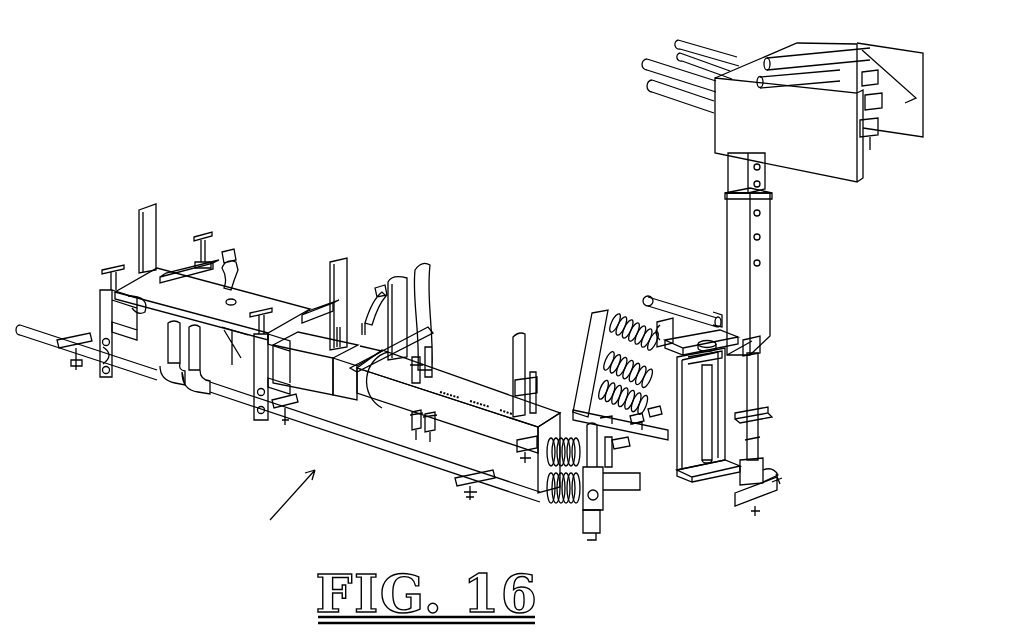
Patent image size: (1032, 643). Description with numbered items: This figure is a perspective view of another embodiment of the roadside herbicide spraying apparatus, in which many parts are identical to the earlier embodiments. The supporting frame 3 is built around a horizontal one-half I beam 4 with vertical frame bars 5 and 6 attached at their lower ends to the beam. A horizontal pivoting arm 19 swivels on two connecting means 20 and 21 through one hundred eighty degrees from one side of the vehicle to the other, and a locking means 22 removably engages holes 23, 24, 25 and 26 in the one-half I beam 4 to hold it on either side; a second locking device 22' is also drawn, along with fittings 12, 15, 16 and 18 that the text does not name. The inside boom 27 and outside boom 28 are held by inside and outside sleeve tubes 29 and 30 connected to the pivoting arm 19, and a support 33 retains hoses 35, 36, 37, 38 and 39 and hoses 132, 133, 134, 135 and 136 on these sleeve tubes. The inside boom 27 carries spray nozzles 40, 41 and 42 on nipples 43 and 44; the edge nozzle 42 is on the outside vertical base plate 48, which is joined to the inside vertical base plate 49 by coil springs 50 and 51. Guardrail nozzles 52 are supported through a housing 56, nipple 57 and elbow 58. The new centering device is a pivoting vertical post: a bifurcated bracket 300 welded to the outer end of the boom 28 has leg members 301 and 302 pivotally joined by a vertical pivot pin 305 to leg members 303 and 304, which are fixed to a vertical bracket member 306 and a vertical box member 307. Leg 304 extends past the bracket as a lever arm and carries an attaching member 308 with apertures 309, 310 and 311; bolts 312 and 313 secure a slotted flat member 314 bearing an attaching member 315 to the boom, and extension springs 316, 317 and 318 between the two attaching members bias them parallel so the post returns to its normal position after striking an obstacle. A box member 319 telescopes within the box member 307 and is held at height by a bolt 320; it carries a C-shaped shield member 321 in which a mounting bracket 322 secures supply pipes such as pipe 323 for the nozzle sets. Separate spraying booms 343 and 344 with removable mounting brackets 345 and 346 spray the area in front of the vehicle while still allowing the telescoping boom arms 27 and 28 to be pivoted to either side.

The supporting frame 3 is at (281, 506).
The one-half I beam 4 is at (192, 308).
The vertical frame bar 5 is at (140, 230).
The vertical frame bar 6 is at (344, 271).
The arm 12 is at (229, 255).
The bracket 15 is at (190, 272).
The bracket 16 is at (323, 306).
The bolt 18 is at (204, 237).
The horizontal pivoting arm 19 is at (298, 378).
The connecting means 20 is at (234, 299).
The connecting means 21 is at (230, 345).
The locking means 22 is at (265, 302).
The T-bolt 22' is at (92, 270).
The hole 23 is at (281, 341).
The hole 24 is at (285, 389).
The hole 25 is at (145, 300).
The hole 26 is at (137, 334).
The inside boom 27 is at (452, 412).
The outside boom 28 is at (447, 366).
The inside sleeve tube 29 is at (350, 386).
The outside sleeve tube 30 is at (395, 380).
The support 33 is at (400, 292).
The hose 35 is at (433, 281).
The hose 36 is at (512, 343).
The hose 37 is at (520, 445).
The hose 38 is at (684, 300).
The hose 39 is at (681, 58).
The spray nozzle 40 is at (411, 428).
The spray nozzle 41 is at (513, 458).
The edge nozzle 42 is at (605, 497).
The nipple 43 is at (427, 432).
The nipple 44 is at (516, 396).
The outside vertical base plate 48 is at (598, 522).
The inside vertical base plate 49 is at (538, 479).
The coil spring 50 is at (568, 503).
The coil spring 51 is at (548, 468).
The guardrail nozzles 52 is at (757, 506).
The housing 56 is at (768, 480).
The nipple 57 is at (760, 445).
The elbow 58 is at (761, 352).
The hose 132 is at (722, 52).
The hose 133 is at (647, 65).
The hose 134 is at (678, 96).
The hose 135 is at (168, 346).
The hose 136 is at (190, 356).
The bifurcated bracket 300 is at (695, 393).
The leg member 301 is at (759, 436).
The leg member 302 is at (714, 373).
The leg member 303 is at (718, 474).
The leg member 304 is at (696, 338).
The vertical pivot pin 305 is at (757, 412).
The vertical bracket member 306 is at (748, 458).
The vertical box member 307 is at (771, 281).
The attaching member 308 is at (676, 306).
The aperture 309 is at (652, 296).
The aperture 310 is at (660, 322).
The aperture 311 is at (656, 416).
The bolt 312 is at (640, 422).
The bolt 313 is at (625, 448).
The flat member 314 is at (580, 405).
The attaching member 315 is at (590, 334).
The extension spring 316 is at (604, 378).
The extension spring 317 is at (606, 352).
The extension spring 318 is at (620, 318).
The box member 319 is at (735, 173).
The bolt 320 is at (776, 233).
The shield member 321 is at (722, 134).
The mounting bracket 322 is at (843, 62).
The supply pipe 323 is at (880, 140).
The spraying boom 343 is at (395, 456).
The spraying boom 344 is at (49, 346).
The removable mounting bracket 345 is at (258, 398).
The removable mounting bracket 346 is at (105, 309).